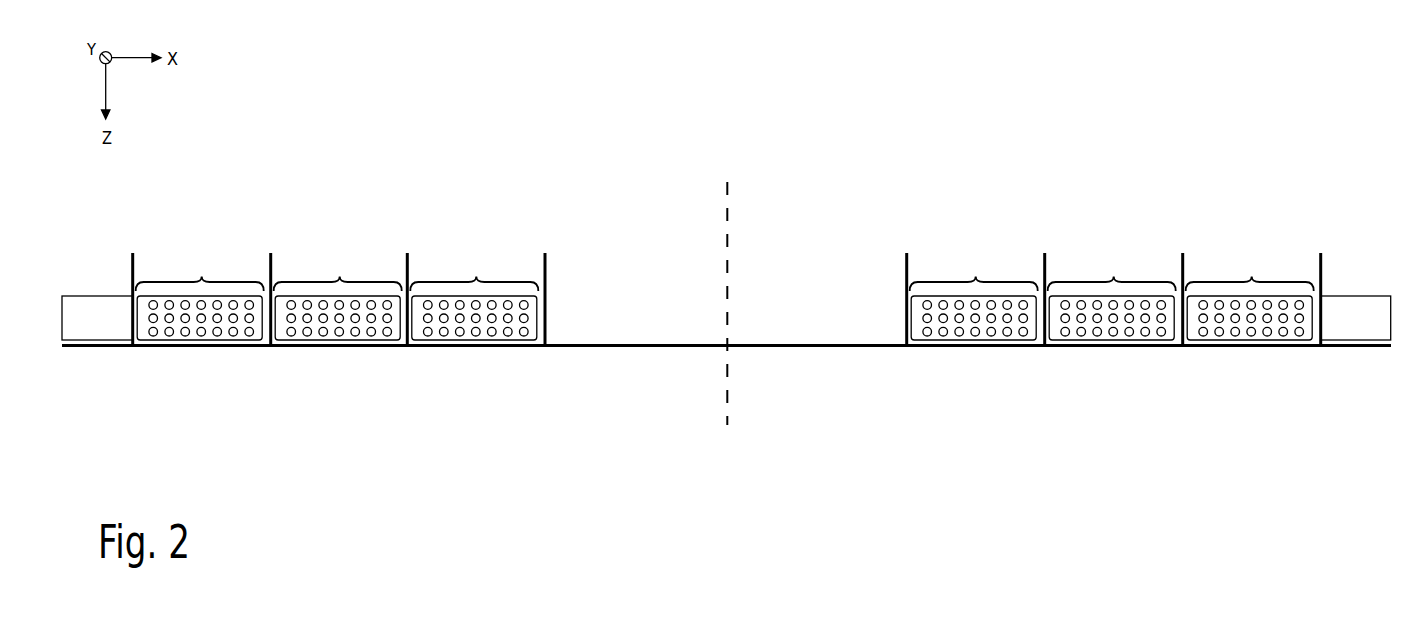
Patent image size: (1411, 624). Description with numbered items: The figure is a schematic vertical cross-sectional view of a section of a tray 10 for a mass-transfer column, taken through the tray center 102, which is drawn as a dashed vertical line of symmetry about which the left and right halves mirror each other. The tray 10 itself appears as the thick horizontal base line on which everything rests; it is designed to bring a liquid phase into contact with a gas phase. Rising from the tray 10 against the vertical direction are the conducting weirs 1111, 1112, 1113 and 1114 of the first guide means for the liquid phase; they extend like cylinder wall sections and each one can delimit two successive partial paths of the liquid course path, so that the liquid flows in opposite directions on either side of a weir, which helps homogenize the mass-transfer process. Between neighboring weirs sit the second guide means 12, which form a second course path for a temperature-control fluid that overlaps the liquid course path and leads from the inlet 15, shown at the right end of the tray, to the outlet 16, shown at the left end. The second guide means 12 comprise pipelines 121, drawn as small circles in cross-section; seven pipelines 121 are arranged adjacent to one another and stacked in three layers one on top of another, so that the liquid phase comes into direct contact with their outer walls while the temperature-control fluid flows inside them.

The tray 10 is at (820, 347).
The tray center 102 is at (728, 186).
The second guide means 12 is at (725, 296).
The pipelines 121 is at (249, 334).
The inlet 15 is at (1367, 295).
The outlet 16 is at (87, 295).
The conducting weir 1111 is at (132, 255).
The conducting weir 1112 is at (270, 255).
The conducting weir 1113 is at (407, 255).
The conducting weir 1114 is at (545, 255).